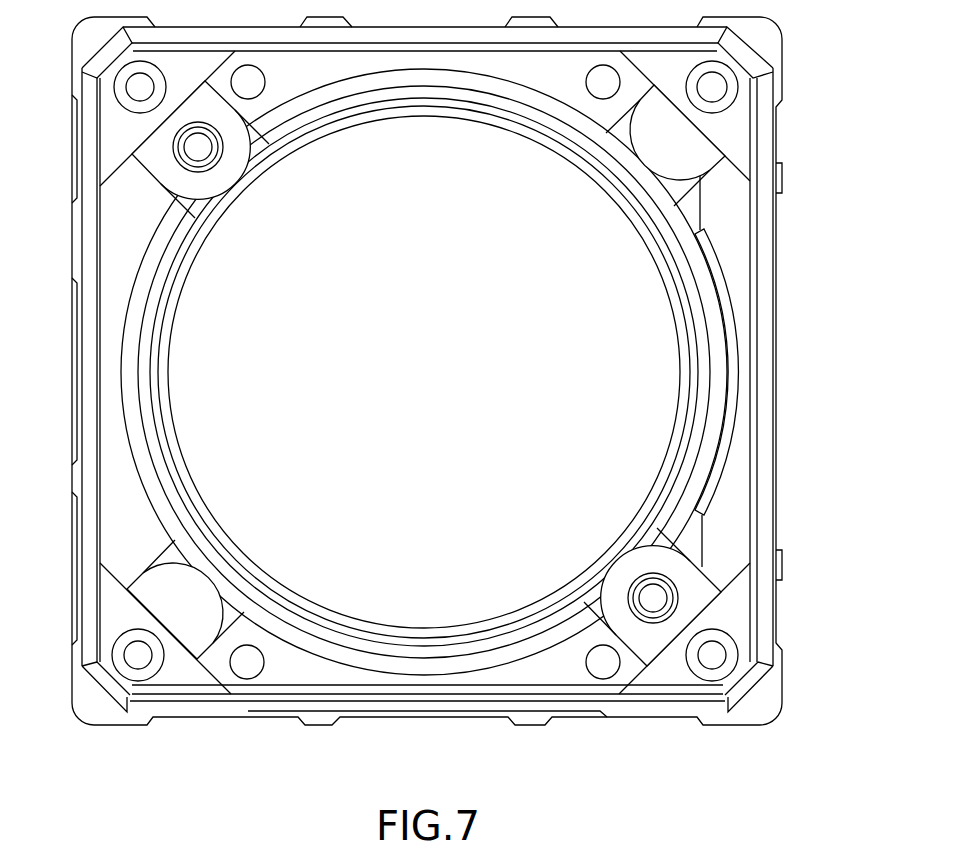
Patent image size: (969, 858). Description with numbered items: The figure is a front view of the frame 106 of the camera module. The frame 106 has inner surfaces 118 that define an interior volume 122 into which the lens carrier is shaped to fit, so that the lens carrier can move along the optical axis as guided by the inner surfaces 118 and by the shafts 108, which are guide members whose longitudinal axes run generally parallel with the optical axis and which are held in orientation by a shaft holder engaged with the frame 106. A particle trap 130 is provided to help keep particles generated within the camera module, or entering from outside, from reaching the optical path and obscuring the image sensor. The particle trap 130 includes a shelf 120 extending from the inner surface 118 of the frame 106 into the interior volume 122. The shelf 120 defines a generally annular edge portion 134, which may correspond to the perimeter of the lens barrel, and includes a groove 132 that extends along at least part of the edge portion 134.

The frame 106 is at (770, 232).
The shaft 108 is at (200, 147).
The inner surface 118 is at (158, 544).
The shelf 120 is at (132, 242).
The interior volume 122 is at (651, 390).
The particle trap 130 is at (494, 152).
The groove 132 is at (145, 410).
The edge portion 134 is at (172, 372).